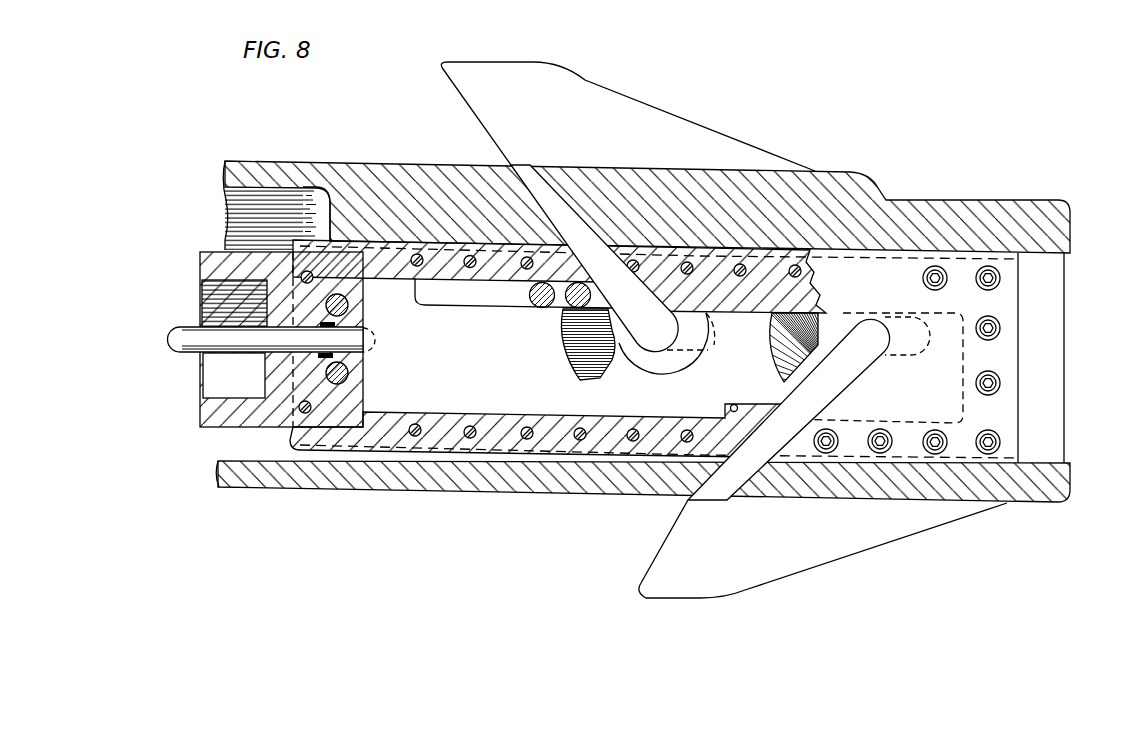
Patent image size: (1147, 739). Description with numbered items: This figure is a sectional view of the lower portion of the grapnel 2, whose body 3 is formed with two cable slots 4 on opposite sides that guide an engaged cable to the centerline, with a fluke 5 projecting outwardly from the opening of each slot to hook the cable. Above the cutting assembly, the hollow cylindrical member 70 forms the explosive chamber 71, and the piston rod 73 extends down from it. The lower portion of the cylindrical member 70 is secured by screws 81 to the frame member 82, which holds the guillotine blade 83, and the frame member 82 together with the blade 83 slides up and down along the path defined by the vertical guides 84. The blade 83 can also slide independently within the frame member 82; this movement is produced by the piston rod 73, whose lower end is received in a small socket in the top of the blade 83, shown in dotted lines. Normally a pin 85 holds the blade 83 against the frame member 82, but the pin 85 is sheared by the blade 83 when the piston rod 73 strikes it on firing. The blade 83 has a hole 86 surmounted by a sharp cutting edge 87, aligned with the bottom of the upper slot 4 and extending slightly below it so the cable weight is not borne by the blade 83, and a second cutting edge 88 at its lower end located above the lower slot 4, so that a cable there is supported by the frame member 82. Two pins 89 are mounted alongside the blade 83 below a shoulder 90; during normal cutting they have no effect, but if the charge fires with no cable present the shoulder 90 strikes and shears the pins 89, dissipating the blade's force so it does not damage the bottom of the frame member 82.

The grapnel 2 is at (506, 543).
The body 3 is at (380, 487).
The cable slots 4 is at (496, 167).
The flukes 5 is at (583, 86).
The hollow cylindrical member 70 is at (207, 412).
The explosive chamber 71 is at (213, 378).
The piston rod 73 is at (182, 326).
The screws 81 is at (350, 374).
The frame member 82 is at (403, 417).
The guillotine blade 83 is at (756, 385).
The vertical guides 84 is at (1064, 257).
The pin 85 is at (740, 413).
The hole 86 is at (683, 365).
The cutting edge 87 is at (616, 366).
The cutting edge 88 is at (820, 338).
The pins 89 is at (537, 307).
The shoulder 90 is at (413, 290).